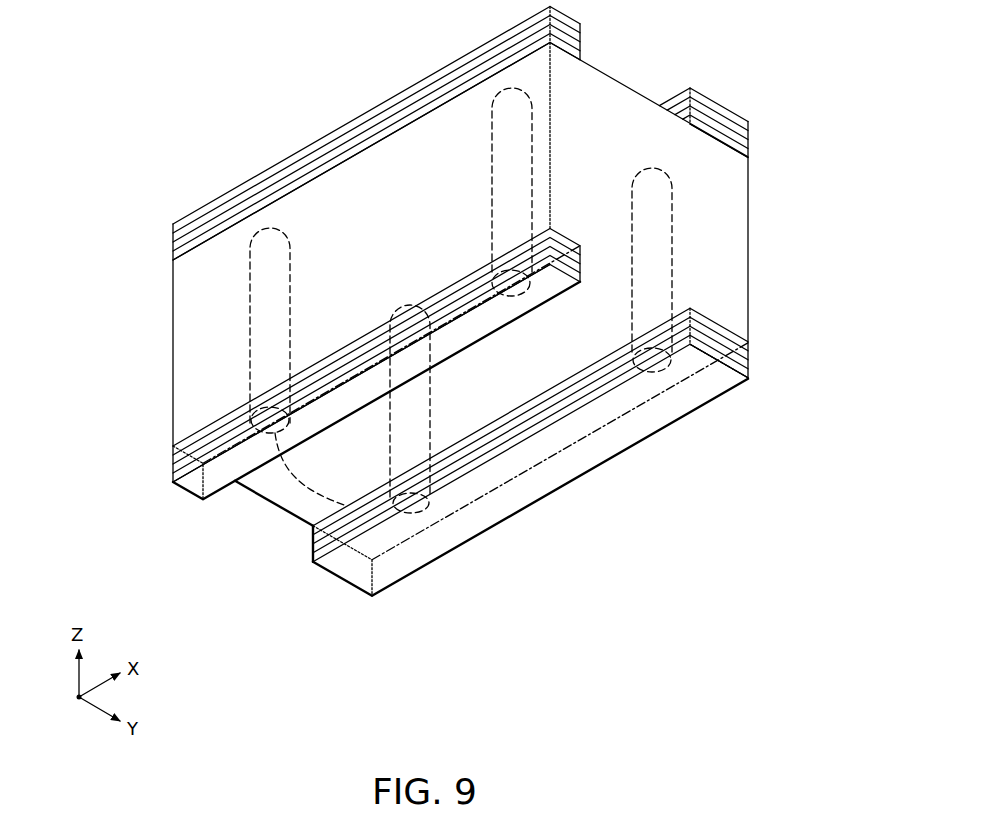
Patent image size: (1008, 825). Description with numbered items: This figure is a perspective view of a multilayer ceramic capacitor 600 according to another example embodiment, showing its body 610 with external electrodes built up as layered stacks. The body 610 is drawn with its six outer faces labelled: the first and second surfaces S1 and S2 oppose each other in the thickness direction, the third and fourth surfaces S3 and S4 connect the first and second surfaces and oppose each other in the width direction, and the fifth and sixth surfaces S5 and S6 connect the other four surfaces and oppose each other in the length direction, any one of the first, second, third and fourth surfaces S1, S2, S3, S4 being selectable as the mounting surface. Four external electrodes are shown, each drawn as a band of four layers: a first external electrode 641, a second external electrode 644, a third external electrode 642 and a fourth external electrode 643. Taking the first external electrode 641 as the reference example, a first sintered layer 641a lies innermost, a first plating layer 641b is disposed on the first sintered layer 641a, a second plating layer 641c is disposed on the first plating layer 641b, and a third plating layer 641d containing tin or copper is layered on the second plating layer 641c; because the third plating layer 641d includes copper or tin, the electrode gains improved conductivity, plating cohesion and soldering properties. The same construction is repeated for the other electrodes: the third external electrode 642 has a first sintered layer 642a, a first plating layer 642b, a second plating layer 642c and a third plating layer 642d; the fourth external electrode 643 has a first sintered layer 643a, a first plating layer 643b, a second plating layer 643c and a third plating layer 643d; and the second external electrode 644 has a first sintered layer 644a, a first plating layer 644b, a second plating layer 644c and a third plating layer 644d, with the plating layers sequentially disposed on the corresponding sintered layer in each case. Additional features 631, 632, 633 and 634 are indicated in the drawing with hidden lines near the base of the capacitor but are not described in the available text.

The battery module housing 600 is at (262, 61).
The base plate 610 is at (275, 513).
The first base layer 631 is at (413, 513).
The second base layer 632 is at (430, 515).
The third base layer 633 is at (650, 372).
The fourth base layer 634 is at (515, 296).
The first external electrode 641 is at (81, 452).
The first sintered layer 641a is at (173, 450).
The first plating layer 641b is at (173, 459).
The second plating layer 641c is at (173, 468).
The third plating layer 641d is at (173, 477).
The third external electrode 642 is at (845, 330).
The first sintered layer 642a is at (750, 346).
The first plating layer 642b is at (750, 355).
The second plating layer 642c is at (750, 364).
The third plating layer 642d is at (750, 373).
The fourth external electrode 643 is at (845, 92).
The first sintered layer 643a is at (750, 152).
The first plating layer 643b is at (750, 143).
The second plating layer 643c is at (750, 134).
The third plating layer 643d is at (750, 124).
The second external electrode 644 is at (81, 190).
The first sintered layer 644a is at (173, 255).
The first plating layer 644b is at (173, 246).
The second plating layer 644c is at (173, 237).
The third plating layer 644d is at (173, 228).
The first surface S1 is at (305, 212).
The second surface S2 is at (306, 511).
The third surface S3 is at (248, 247).
The fourth surface S4 is at (697, 365).
The fifth surface S5 is at (262, 477).
The sixth surface S6 is at (632, 146).